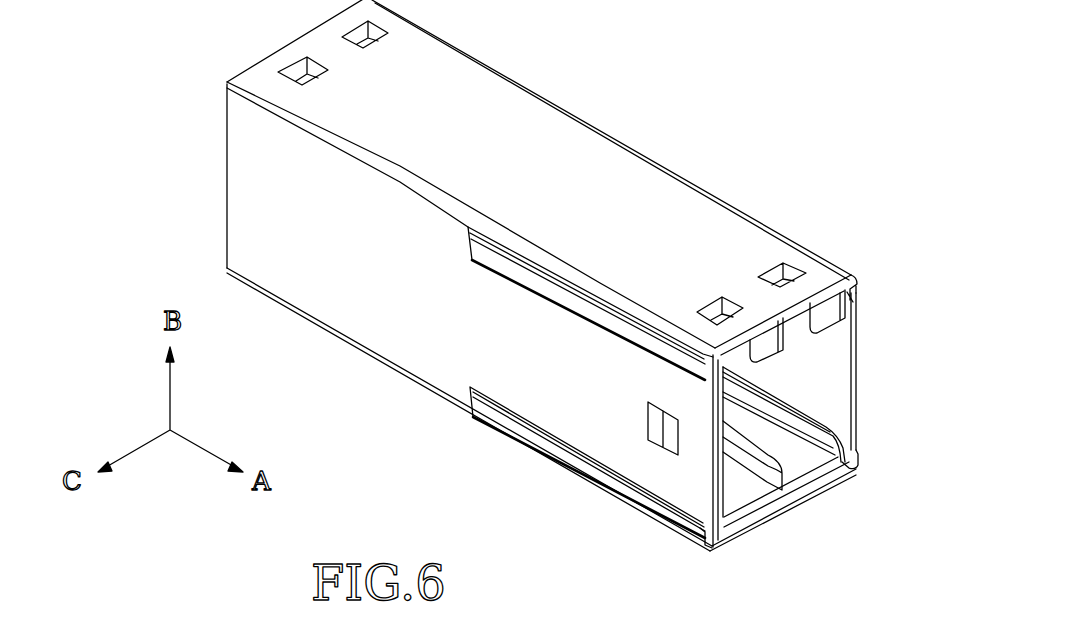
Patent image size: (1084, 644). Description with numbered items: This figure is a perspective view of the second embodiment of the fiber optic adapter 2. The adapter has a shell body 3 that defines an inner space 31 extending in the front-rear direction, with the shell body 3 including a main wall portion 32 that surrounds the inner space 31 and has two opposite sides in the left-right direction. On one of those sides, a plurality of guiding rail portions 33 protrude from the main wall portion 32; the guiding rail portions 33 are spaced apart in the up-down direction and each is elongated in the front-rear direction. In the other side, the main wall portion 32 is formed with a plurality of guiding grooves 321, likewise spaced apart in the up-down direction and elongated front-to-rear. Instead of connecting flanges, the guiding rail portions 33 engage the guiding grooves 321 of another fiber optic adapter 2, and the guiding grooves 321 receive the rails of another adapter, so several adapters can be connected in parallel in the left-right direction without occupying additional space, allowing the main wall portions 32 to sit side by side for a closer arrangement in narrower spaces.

The fiber optic adapter 2 is at (585, 285).
The shell body 3 is at (585, 285).
The inner space 31 is at (803, 381).
The main wall portion 32 is at (642, 188).
The guiding groove 321 is at (857, 288).
The guiding rail portion 33 is at (597, 322).